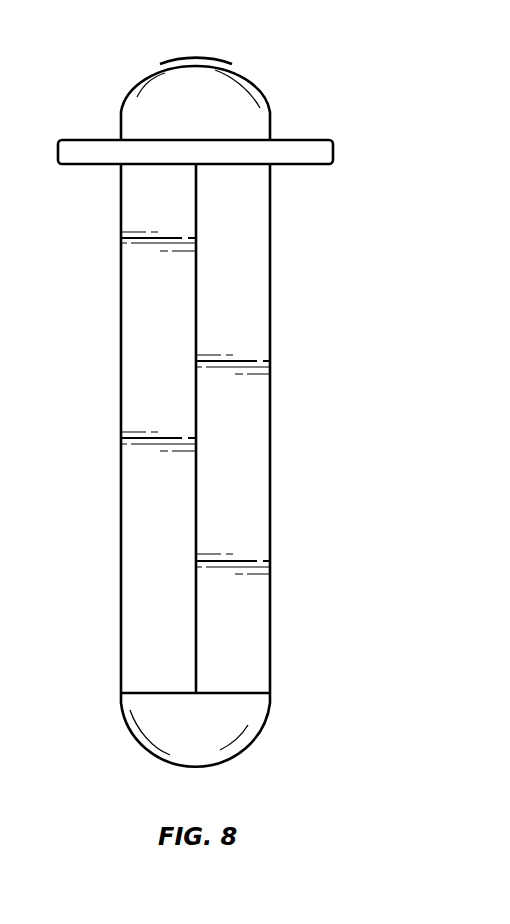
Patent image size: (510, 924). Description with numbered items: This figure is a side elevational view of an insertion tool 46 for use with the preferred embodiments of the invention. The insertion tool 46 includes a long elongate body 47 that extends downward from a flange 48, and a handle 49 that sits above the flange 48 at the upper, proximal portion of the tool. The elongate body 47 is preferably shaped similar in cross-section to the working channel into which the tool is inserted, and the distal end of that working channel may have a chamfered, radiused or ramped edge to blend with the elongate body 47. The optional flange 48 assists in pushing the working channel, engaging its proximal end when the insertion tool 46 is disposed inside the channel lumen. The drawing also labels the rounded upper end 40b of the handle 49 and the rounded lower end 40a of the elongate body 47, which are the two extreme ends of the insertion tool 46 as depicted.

The insertion tool 46 is at (279, 58).
The elongate body 47 is at (263, 477).
The flange 48 is at (300, 167).
The handle 49 is at (127, 117).
The upper end 40b is at (197, 58).
The lower end 40a is at (190, 768).